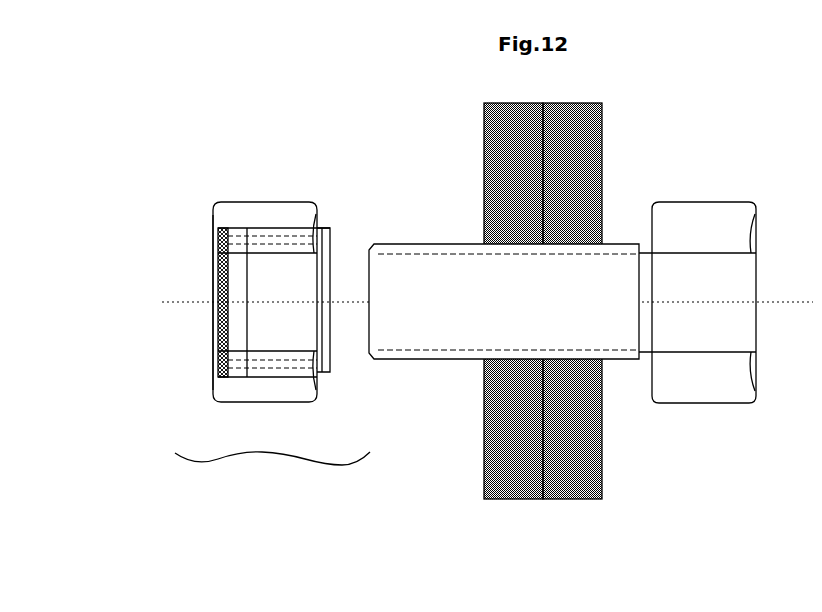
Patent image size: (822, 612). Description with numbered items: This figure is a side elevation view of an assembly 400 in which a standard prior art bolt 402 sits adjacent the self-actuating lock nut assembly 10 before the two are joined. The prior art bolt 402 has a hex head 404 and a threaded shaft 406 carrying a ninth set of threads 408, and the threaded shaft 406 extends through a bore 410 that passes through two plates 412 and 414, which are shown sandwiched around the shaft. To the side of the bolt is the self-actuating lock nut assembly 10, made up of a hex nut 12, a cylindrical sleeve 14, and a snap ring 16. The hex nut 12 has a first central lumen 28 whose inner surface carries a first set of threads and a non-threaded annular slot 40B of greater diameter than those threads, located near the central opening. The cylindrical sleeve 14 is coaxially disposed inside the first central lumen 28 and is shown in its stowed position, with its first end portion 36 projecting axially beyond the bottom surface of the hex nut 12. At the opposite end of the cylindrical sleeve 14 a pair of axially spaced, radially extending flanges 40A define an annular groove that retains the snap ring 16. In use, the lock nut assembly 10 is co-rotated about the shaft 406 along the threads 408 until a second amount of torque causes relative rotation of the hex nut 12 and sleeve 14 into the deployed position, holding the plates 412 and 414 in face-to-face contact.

The self-actuating lock nut assembly 10 is at (272, 474).
The hex nut 12 is at (275, 216).
The cylindrical sleeve 14 is at (296, 338).
The snap ring 16 is at (222, 357).
The first central lumen 28 is at (205, 298).
The first end portion 36 is at (332, 372).
The radially extending flanges 40A is at (185, 276).
The non-threaded annular slot 40B is at (207, 276).
The assembly 400 is at (594, 334).
The prior art bolt 402 is at (715, 290).
The hex head 404 is at (594, 278).
The threaded shaft 406 is at (392, 328).
The ninth set of threads 408 is at (457, 257).
The bore 410 is at (590, 227).
The plate 412 is at (580, 142).
The plate 414 is at (500, 152).